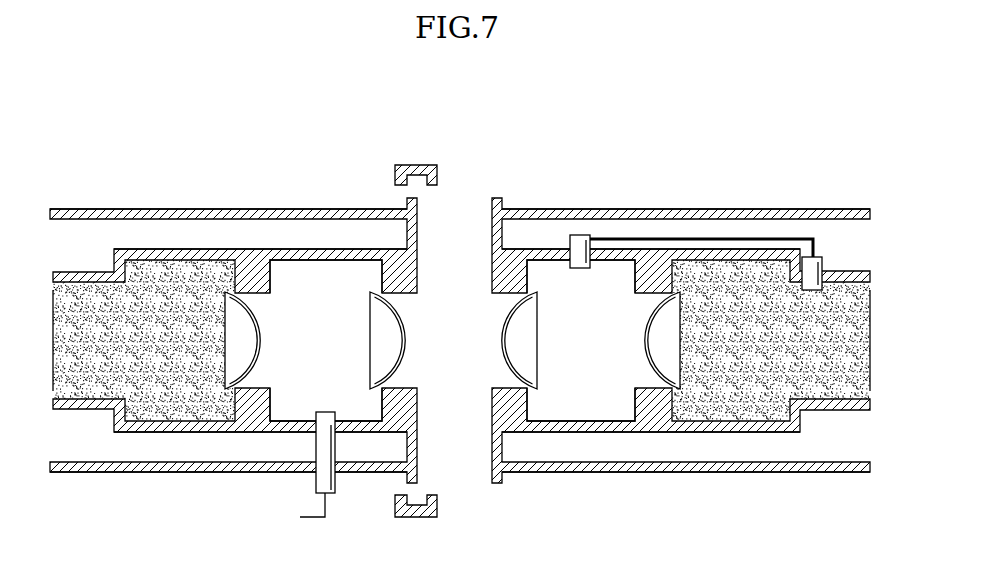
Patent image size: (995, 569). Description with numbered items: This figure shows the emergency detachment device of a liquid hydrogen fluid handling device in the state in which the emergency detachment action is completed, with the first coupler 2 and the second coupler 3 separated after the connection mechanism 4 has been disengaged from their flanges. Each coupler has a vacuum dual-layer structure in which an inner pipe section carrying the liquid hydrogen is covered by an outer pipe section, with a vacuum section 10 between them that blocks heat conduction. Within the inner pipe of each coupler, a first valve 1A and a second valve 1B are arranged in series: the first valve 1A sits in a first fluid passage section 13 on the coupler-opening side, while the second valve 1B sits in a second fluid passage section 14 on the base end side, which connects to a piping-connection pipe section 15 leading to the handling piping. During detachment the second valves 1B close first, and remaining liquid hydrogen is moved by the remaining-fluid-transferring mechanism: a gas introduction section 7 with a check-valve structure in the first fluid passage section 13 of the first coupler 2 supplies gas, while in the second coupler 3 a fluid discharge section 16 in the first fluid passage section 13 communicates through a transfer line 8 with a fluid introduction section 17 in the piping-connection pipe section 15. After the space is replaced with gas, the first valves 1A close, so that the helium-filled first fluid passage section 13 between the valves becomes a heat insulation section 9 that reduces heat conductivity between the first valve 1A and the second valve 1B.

The first valve 1A is at (398, 323).
The second valve 1B is at (222, 358).
The first coupler 2 is at (192, 190).
The second coupler 3 is at (677, 195).
The connection mechanism 4 is at (415, 165).
The gas introduction section 7 is at (336, 482).
The wire 8 is at (642, 237).
The heat insulation section 9 is at (342, 275).
The vacuum section 10 is at (134, 447).
The first fluid passage section 13 is at (302, 388).
The second fluid passage section 14 is at (188, 383).
The piping-connection pipe section 15 is at (75, 373).
The fluid discharge section 16 is at (578, 234).
The fluid introduction section 17 is at (822, 256).